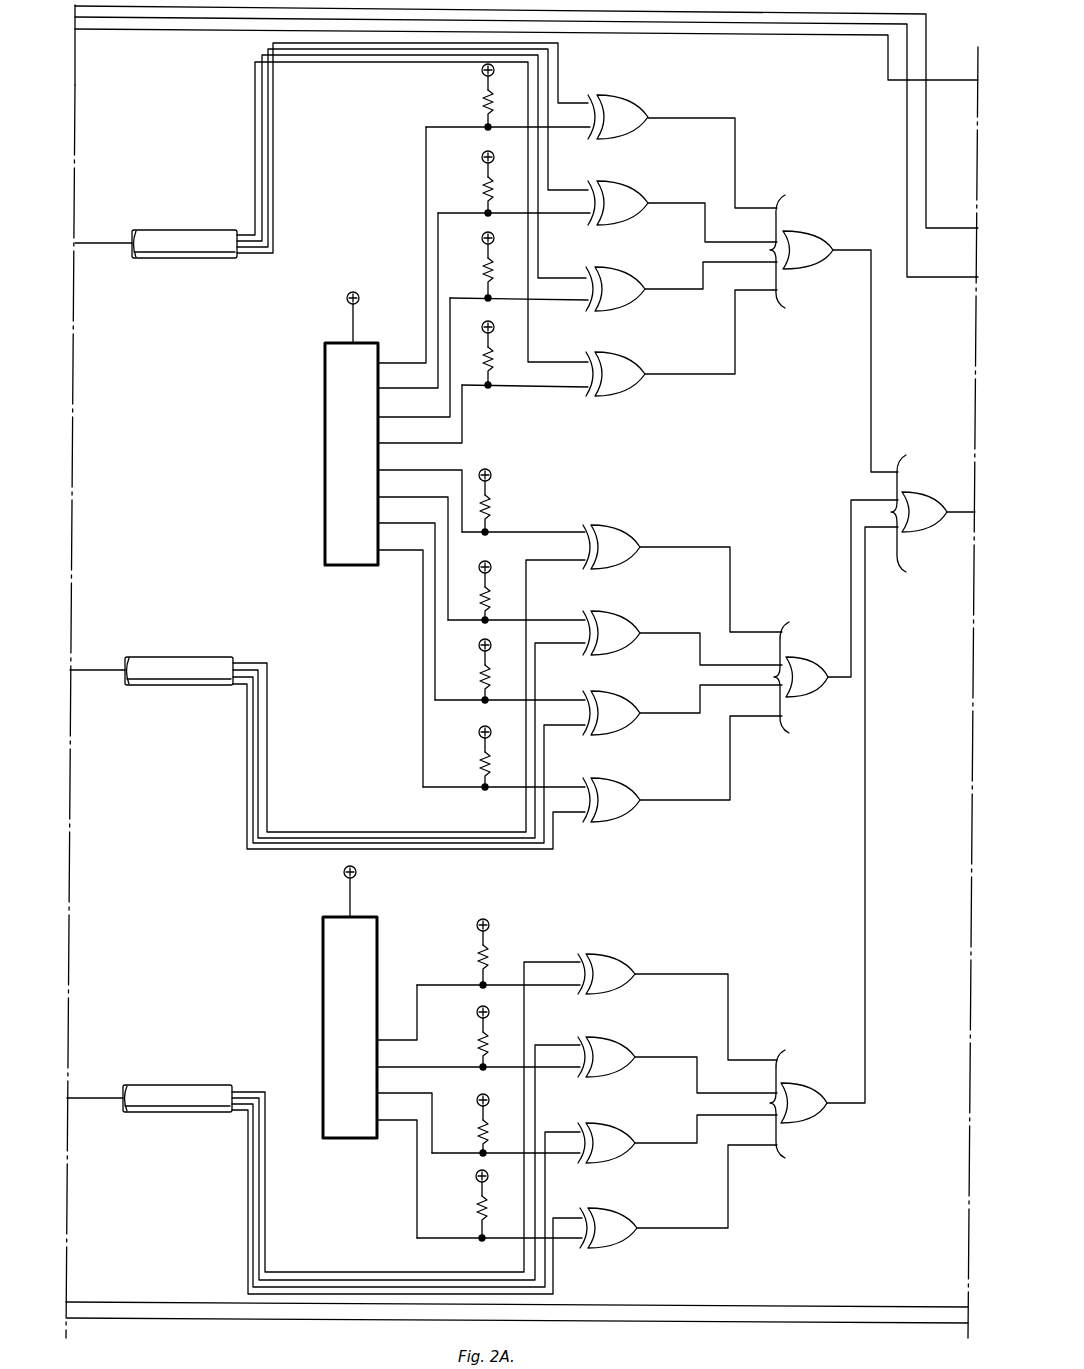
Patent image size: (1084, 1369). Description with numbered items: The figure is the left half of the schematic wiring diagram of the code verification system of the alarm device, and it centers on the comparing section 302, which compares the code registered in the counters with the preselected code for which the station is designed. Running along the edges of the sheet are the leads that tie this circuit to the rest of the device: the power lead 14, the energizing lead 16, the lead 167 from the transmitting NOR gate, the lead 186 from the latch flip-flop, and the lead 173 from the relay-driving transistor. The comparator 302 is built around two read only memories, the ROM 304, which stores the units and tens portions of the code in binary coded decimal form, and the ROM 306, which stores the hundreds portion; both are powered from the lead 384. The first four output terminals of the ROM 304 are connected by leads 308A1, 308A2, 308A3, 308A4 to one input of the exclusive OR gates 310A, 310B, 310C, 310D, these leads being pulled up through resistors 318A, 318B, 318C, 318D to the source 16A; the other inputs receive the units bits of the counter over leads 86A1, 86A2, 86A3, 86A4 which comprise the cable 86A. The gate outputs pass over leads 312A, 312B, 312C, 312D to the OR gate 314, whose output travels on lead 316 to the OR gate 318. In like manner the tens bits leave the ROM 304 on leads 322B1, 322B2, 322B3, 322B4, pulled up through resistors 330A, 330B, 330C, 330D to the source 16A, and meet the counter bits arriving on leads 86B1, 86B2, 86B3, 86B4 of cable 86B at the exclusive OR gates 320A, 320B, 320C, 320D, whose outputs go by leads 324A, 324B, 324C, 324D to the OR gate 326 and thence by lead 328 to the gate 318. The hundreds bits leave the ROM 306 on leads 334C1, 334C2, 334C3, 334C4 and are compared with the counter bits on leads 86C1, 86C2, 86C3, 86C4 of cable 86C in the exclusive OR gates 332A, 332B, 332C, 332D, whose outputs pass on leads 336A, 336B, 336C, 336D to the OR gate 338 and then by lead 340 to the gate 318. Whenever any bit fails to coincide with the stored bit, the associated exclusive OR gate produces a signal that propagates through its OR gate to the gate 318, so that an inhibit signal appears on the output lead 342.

The lead 16 is at (120, 26).
The lead 14 is at (152, 27).
The lead 167 is at (188, 33).
The lead 186 is at (114, 1302).
The lead 173 is at (170, 1318).
The cable 86A is at (103, 242).
The lead 86A1 is at (255, 103).
The lead 86A2 is at (262, 128).
The lead 86A3 is at (268, 152).
The lead 86A4 is at (273, 180).
The cable 86B is at (102, 668).
The lead 86B1 is at (267, 698).
The lead 86B2 is at (258, 727).
The lead 86B3 is at (253, 757).
The lead 86B4 is at (247, 787).
The cable 86C is at (100, 1097).
The lead 86C1 is at (265, 1172).
The lead 86C2 is at (259, 1200).
The lead 86C3 is at (253, 1228).
The lead 86C4 is at (248, 1258).
The energizing lead 16A is at (481, 70).
The lead 384 is at (352, 292).
The read only memory 304 is at (325, 345).
The read only memory 306 is at (323, 930).
The comparing section 302 is at (372, 600).
The lead 308A1 is at (400, 362).
The lead 308A2 is at (408, 300).
The lead 308A3 is at (414, 357).
The lead 308A4 is at (441, 431).
The lead 322B1 is at (440, 457).
The lead 322B2 is at (413, 548).
The lead 322B3 is at (406, 601).
The lead 322B4 is at (405, 658).
The lead 334C1 is at (372, 1012).
The lead 334C2 is at (405, 1053).
The lead 334C3 is at (380, 1110).
The lead 334C4 is at (372, 1166).
The resistor 318A is at (483, 97).
The resistor 318B is at (483, 190).
The resistor 318C is at (483, 272).
The resistor 318D is at (483, 352).
The resistor 330A is at (493, 505).
The resistor 330B is at (492, 585).
The resistor 330C is at (480, 668).
The resistor 330D is at (480, 755).
The exclusive OR gate 310A is at (640, 105).
The exclusive OR gate 310B is at (638, 190).
The exclusive OR gate 310C is at (635, 282).
The exclusive OR gate 310D is at (635, 367).
The lead 312A is at (718, 117).
The lead 312B is at (695, 203).
The lead 312C is at (668, 290).
The lead 312D is at (658, 376).
The OR gate 314 is at (818, 232).
The lead 316 is at (871, 338).
The exclusive OR gate 320A is at (628, 525).
The exclusive OR gate 320B is at (625, 613).
The exclusive OR gate 320C is at (622, 693).
The exclusive OR gate 320D is at (620, 780).
The lead 324A is at (698, 545).
The lead 324B is at (680, 632).
The lead 324C is at (675, 700).
The lead 324D is at (685, 785).
The OR gate 326 is at (805, 655).
The lead 328 is at (851, 510).
The OR gate 318 is at (920, 493).
The lead 342 is at (955, 520).
The exclusive OR gate 332A is at (628, 958).
The exclusive OR gate 332B is at (618, 1040).
The exclusive OR gate 332C is at (620, 1130).
The exclusive OR gate 332D is at (635, 1195).
The lead 336A is at (718, 955).
The lead 336B is at (680, 1057).
The lead 336C is at (660, 1145).
The lead 336D is at (658, 1230).
The OR gate 338 is at (810, 1082).
The lead 340 is at (865, 822).